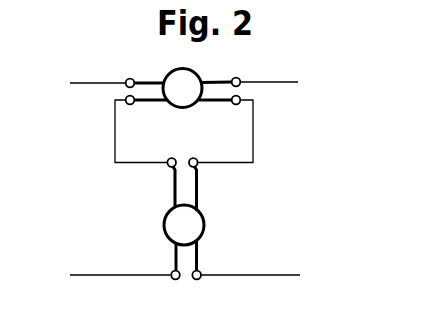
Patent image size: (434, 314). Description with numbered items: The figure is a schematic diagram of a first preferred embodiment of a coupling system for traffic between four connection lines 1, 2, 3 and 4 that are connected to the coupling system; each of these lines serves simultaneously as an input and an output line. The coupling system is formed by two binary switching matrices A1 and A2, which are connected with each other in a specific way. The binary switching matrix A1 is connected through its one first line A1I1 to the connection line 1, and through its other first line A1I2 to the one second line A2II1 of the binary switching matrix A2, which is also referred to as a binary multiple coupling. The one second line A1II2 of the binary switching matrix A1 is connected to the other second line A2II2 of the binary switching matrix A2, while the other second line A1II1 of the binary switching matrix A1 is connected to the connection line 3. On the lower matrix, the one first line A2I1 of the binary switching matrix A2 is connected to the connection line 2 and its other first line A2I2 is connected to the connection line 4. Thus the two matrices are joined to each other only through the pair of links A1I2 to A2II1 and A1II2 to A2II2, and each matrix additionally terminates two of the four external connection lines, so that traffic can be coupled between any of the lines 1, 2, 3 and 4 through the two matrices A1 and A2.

The connection line 1 is at (91, 83).
The connection line 2 is at (113, 273).
The connection line 3 is at (277, 83).
The connection line 4 is at (259, 273).
The binary switching matrix A1 is at (182, 88).
The binary switching matrix A2 is at (184, 225).
The one first line of binary switching matrix A1 A1I1 is at (155, 78).
The other first line of binary switching matrix A1 A1I2 is at (174, 116).
The other second line of binary switching matrix A1 A1II1 is at (207, 78).
The one second line of binary switching matrix A1 A1II2 is at (203, 106).
The one first line of binary switching matrix A2 A2I1 is at (174, 254).
The other first line of binary switching matrix A2 A2I2 is at (197, 254).
The one second line of binary switching matrix A2 A2II1 is at (174, 184).
The other second line of binary switching matrix A2 A2II2 is at (196, 184).